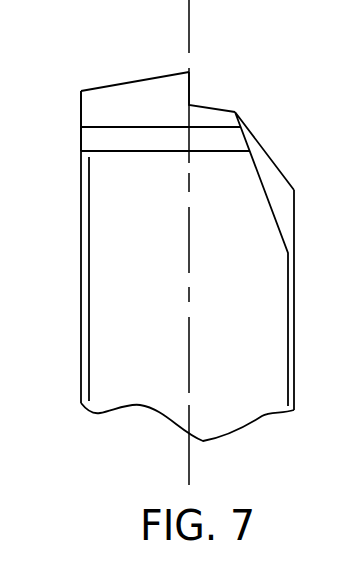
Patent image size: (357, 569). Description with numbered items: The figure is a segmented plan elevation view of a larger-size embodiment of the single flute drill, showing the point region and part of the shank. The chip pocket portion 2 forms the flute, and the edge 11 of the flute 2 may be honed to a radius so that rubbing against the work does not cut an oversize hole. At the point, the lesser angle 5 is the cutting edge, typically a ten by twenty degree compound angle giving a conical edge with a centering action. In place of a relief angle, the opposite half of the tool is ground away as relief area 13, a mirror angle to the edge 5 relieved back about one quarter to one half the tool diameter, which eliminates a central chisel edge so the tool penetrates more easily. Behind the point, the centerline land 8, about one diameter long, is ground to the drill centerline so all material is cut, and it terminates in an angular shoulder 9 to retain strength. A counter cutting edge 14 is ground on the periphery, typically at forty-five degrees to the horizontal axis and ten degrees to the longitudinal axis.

The chip pocket portion 2 is at (242, 384).
The lesser angle 5 is at (139, 77).
The centerline land 8 is at (99, 102).
The angular shoulder 9 is at (104, 140).
The edge of flute 11 is at (89, 191).
The relief area 13 is at (209, 107).
The counter cutting edge 14 is at (267, 172).